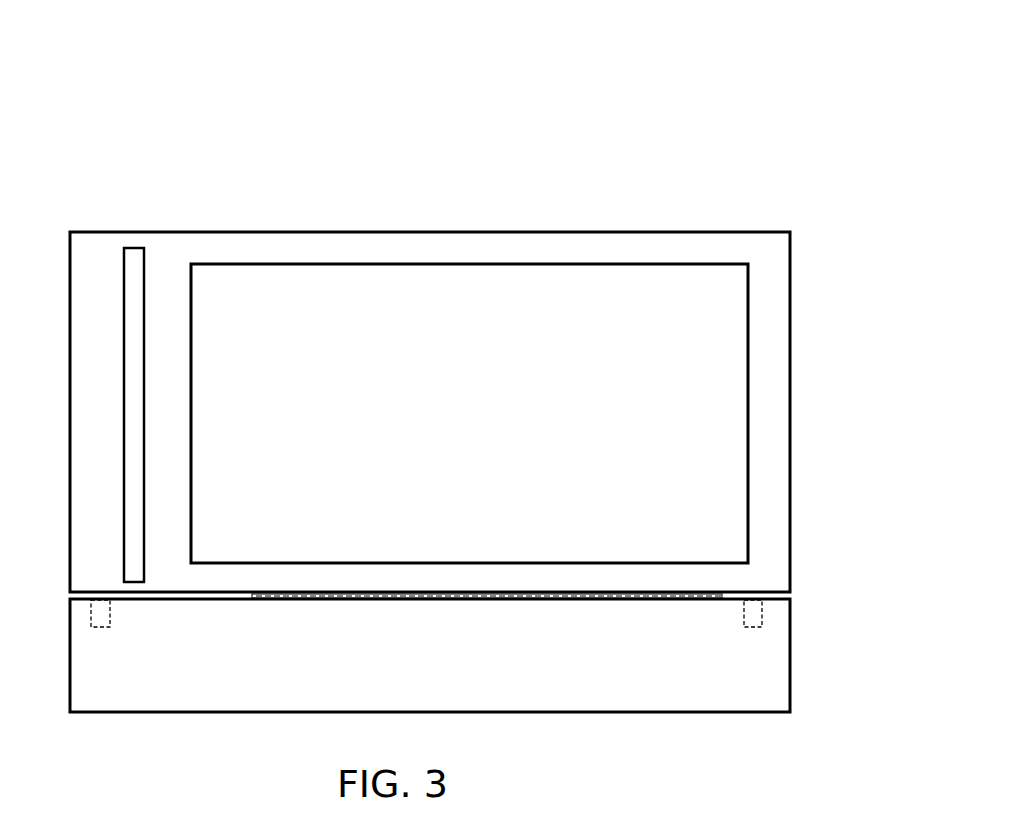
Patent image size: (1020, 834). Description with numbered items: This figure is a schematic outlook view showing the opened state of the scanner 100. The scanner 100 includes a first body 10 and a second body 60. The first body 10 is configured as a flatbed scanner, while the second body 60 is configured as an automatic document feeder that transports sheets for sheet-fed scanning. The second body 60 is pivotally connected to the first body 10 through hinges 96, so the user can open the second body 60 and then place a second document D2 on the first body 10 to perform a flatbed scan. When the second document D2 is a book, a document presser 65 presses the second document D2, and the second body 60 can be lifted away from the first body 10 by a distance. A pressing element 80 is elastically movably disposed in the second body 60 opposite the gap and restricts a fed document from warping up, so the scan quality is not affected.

The scanner 100 is at (436, 76).
The second body 60 is at (288, 232).
The pressing element 80 is at (130, 252).
The document presser 65 is at (510, 270).
The second document D2 is at (344, 595).
The first body 10 is at (793, 640).
The hinges 96 is at (111, 624).